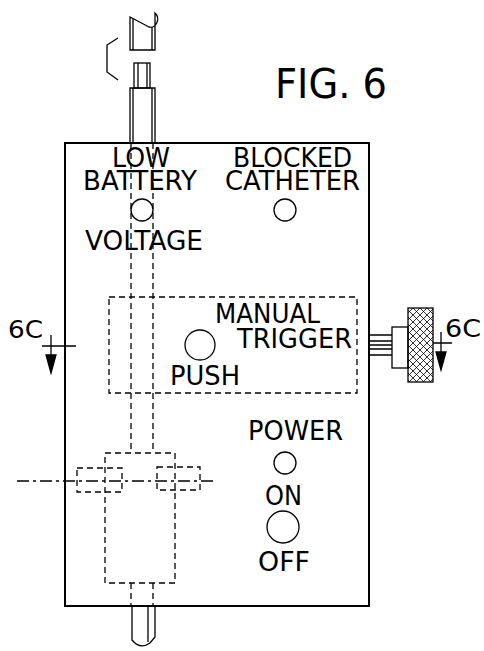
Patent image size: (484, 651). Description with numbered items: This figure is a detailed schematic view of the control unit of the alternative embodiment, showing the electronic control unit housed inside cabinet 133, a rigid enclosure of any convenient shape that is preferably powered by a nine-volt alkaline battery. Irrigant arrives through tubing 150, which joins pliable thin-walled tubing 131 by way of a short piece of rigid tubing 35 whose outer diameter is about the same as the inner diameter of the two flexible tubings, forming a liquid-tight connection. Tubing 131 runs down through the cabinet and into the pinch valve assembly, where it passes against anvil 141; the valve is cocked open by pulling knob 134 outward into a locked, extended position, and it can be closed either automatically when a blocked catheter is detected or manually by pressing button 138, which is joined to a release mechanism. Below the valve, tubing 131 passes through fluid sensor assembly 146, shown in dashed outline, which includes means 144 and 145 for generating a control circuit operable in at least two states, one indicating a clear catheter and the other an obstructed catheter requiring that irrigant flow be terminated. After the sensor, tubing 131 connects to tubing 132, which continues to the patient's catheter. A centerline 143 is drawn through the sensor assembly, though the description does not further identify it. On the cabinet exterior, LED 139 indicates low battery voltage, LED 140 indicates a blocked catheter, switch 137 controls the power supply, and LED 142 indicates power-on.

The rigid tubing 35 is at (148, 78).
The tubing segment 131 is at (152, 120).
The tubing 132 is at (130, 628).
The cabinet 133 is at (369, 210).
The knob 134 is at (420, 313).
The switch 137 is at (293, 526).
The button 138 is at (194, 331).
The LED 139 is at (153, 210).
The LED 140 is at (293, 218).
The anvil 141 is at (108, 315).
The LED 142 is at (290, 458).
The centerline axis 143 is at (53, 479).
The means for generating a control circuit 144 is at (88, 492).
The means for generating a control circuit 145 is at (175, 492).
The fluid sensor assembly 146 is at (106, 556).
The tubing 150 is at (150, 38).